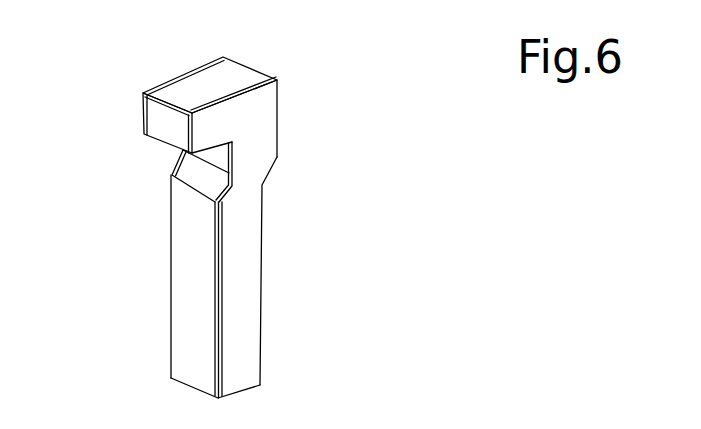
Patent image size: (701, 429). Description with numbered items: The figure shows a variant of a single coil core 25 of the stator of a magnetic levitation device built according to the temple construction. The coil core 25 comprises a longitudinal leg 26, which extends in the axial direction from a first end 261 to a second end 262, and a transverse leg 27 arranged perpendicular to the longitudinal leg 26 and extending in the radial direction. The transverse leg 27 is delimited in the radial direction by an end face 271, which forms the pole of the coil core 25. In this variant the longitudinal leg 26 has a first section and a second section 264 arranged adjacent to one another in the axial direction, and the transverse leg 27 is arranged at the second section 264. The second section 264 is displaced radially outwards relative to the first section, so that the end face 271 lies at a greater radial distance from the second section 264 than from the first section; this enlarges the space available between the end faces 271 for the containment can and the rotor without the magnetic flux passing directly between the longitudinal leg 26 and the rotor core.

The coil core 25 is at (372, 109).
The longitudinal leg 26 is at (245, 283).
The first end 261 is at (247, 380).
The second end 262 is at (263, 110).
The second section 264 is at (223, 155).
The transverse leg 27 is at (188, 85).
The end face 271 is at (143, 123).